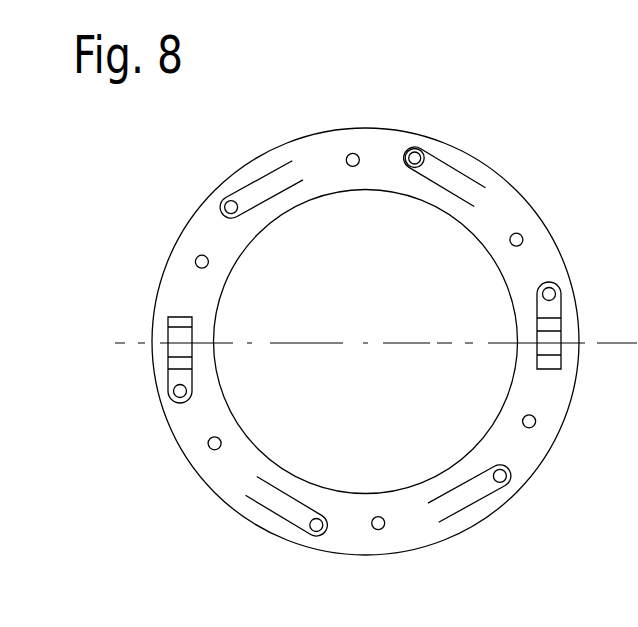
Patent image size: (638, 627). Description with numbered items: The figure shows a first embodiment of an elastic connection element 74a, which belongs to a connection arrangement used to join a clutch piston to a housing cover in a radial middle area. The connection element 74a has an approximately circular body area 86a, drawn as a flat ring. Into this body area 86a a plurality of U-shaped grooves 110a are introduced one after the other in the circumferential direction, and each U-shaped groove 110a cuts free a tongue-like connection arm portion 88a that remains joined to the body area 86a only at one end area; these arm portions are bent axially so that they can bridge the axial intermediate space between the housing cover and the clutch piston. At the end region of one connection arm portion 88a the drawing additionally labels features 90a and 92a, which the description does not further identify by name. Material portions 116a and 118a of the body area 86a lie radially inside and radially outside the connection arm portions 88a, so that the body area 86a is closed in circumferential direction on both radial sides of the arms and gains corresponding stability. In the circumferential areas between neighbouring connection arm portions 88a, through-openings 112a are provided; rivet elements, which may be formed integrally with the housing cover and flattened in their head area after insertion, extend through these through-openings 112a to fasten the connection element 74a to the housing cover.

The connection element 74a is at (514, 141).
The body area 86a is at (518, 207).
The connection arm portions 88a is at (437, 168).
The counterbore of slot hole 90a is at (410, 152).
The slot hole 92a is at (412, 164).
The U-shaped grooves 110a is at (249, 186).
The through-openings 112a is at (193, 261).
The material portion 116a is at (153, 364).
The material portion 118a is at (202, 368).